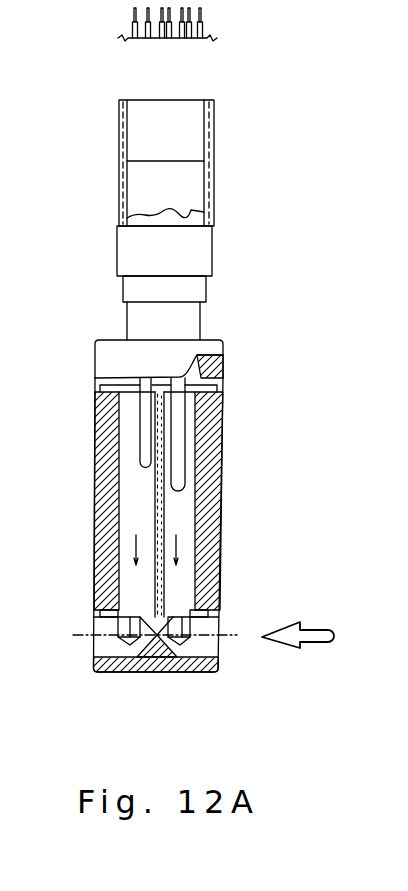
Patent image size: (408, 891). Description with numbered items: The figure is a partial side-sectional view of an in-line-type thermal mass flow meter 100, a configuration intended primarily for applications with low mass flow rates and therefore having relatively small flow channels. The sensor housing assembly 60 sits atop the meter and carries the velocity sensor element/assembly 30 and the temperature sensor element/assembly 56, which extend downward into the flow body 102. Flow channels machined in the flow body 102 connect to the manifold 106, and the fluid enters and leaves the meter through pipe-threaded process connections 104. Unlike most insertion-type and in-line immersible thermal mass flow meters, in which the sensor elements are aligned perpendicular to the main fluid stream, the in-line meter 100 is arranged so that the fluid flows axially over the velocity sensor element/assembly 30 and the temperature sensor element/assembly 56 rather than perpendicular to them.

The sensor housing assembly 60 is at (213, 190).
The in-line meter 100 is at (240, 327).
The manifold 106 is at (220, 363).
The flow body 102 is at (220, 522).
The pipe-threaded process connections 104 is at (208, 610).
The temperature sensor element/assembly 56 is at (138, 425).
The velocity sensor element/assembly 30 is at (185, 447).